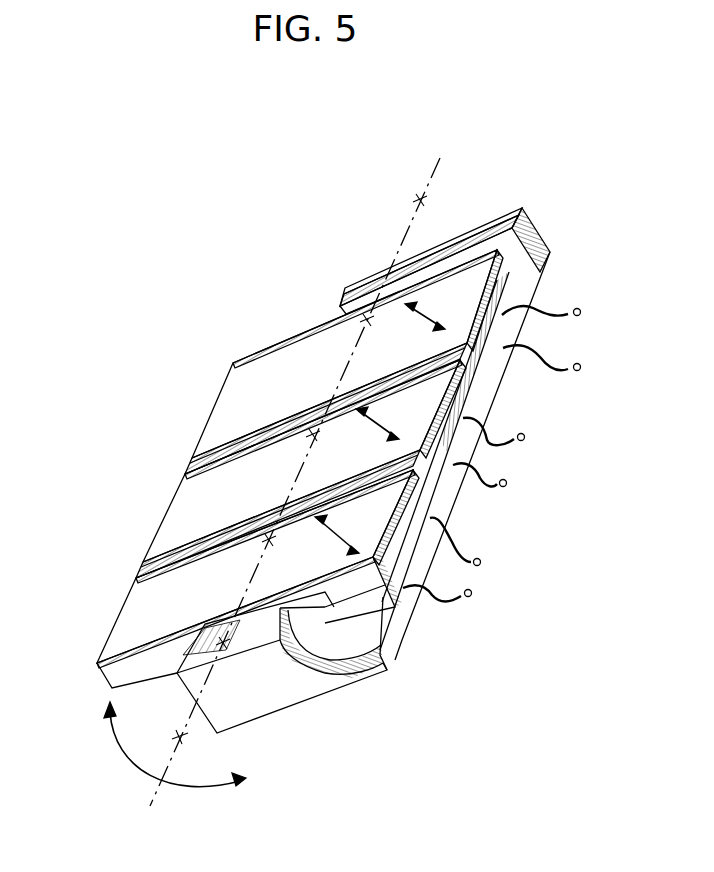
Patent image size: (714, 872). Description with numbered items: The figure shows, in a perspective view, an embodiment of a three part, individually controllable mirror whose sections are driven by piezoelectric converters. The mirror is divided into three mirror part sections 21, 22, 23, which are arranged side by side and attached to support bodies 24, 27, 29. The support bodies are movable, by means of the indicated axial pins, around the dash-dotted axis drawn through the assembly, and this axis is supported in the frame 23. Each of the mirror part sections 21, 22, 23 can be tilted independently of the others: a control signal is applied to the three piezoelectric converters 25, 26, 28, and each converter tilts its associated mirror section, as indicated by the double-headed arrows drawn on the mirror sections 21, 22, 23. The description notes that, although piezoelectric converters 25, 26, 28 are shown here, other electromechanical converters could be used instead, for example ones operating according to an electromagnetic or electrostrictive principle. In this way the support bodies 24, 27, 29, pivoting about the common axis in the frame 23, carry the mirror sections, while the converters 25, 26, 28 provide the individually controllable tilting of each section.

The mirror part section 21 is at (180, 518).
The mirror part section 22 is at (230, 413).
The mirror part section / frame 23 is at (133, 620).
The support body 24 is at (108, 680).
The piezoelectric converter 25 is at (512, 325).
The piezoelectric converter 26 is at (478, 410).
The support body 27 is at (445, 430).
The piezoelectric converter 28 is at (427, 522).
The support body 29 is at (517, 252).